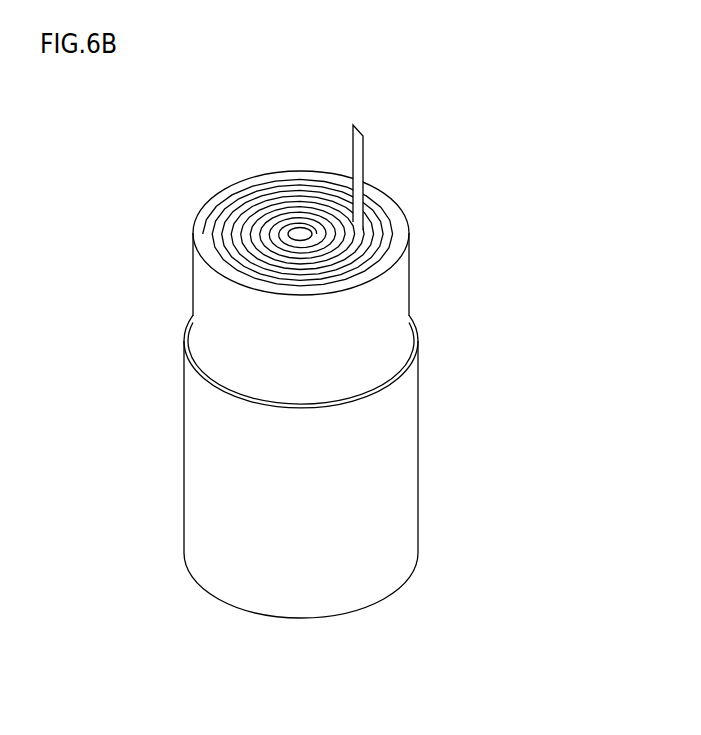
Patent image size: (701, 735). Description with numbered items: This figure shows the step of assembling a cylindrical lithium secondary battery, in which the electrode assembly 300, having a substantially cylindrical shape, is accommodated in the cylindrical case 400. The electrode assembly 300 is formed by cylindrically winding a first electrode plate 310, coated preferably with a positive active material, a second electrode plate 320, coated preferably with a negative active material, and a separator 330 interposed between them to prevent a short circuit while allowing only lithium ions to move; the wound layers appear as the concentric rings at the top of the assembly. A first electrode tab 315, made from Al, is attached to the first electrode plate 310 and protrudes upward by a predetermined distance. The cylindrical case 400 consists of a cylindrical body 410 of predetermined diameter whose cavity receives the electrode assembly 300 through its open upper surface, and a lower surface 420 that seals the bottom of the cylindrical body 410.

The electrode assembly 300 is at (521, 206).
The first electrode plate 310 is at (380, 220).
The second electrode plate 320 is at (400, 252).
The separator 330 is at (392, 230).
The first electrode tab 315 is at (358, 149).
The cylindrical case 400 is at (446, 449).
The cylindrical body 410 is at (403, 398).
The lower surface 420 is at (362, 610).